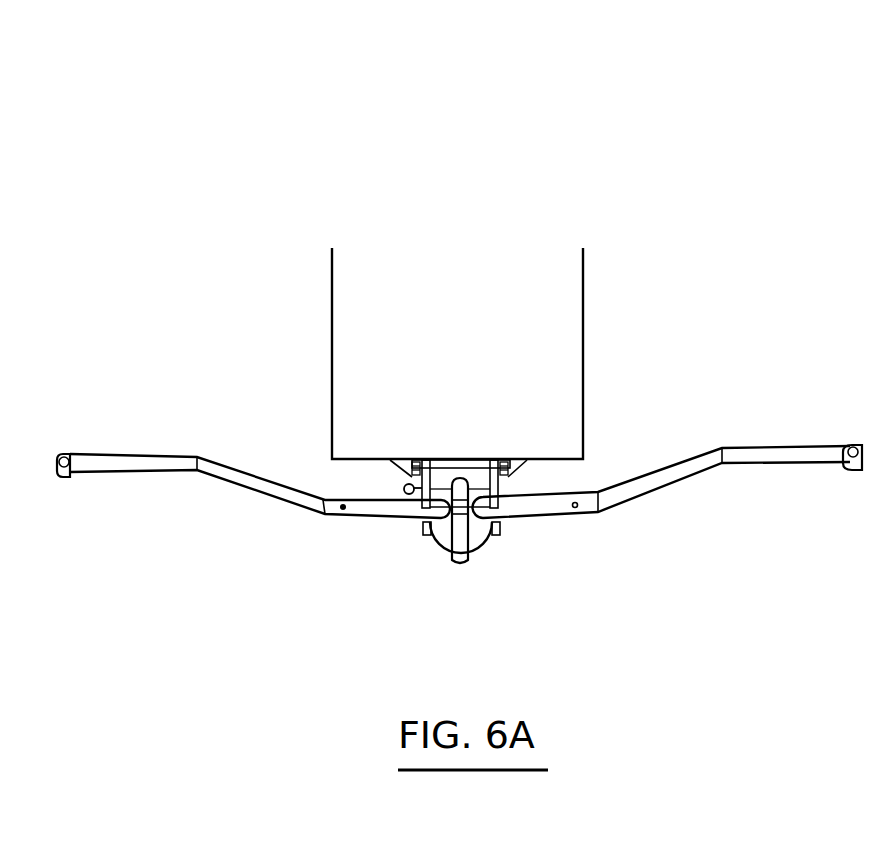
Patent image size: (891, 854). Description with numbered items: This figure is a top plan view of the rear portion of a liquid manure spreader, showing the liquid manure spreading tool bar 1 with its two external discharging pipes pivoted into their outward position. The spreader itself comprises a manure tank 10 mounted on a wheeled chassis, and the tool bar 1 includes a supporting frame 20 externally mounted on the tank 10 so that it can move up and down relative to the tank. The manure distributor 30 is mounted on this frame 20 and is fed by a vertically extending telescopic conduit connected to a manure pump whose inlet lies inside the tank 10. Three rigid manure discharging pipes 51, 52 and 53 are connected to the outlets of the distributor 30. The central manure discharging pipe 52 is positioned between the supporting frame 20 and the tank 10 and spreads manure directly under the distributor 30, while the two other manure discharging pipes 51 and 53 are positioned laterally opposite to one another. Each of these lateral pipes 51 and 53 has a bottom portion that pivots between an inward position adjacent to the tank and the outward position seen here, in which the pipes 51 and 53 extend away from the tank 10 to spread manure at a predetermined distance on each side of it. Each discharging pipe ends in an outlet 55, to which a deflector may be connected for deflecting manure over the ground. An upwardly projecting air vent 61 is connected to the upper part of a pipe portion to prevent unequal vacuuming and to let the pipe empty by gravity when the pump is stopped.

The liquid manure spreading tool bar 1 is at (264, 178).
The manure tank 10 is at (465, 349).
The supporting frame 20 is at (403, 489).
The manure distributor 30 is at (486, 552).
The manure discharging pipe 51 is at (273, 510).
The central manure discharging pipe 52 is at (467, 477).
The manure discharging pipe 53 is at (585, 524).
The outlet 55 is at (64, 477).
The air vent 61 is at (344, 508).